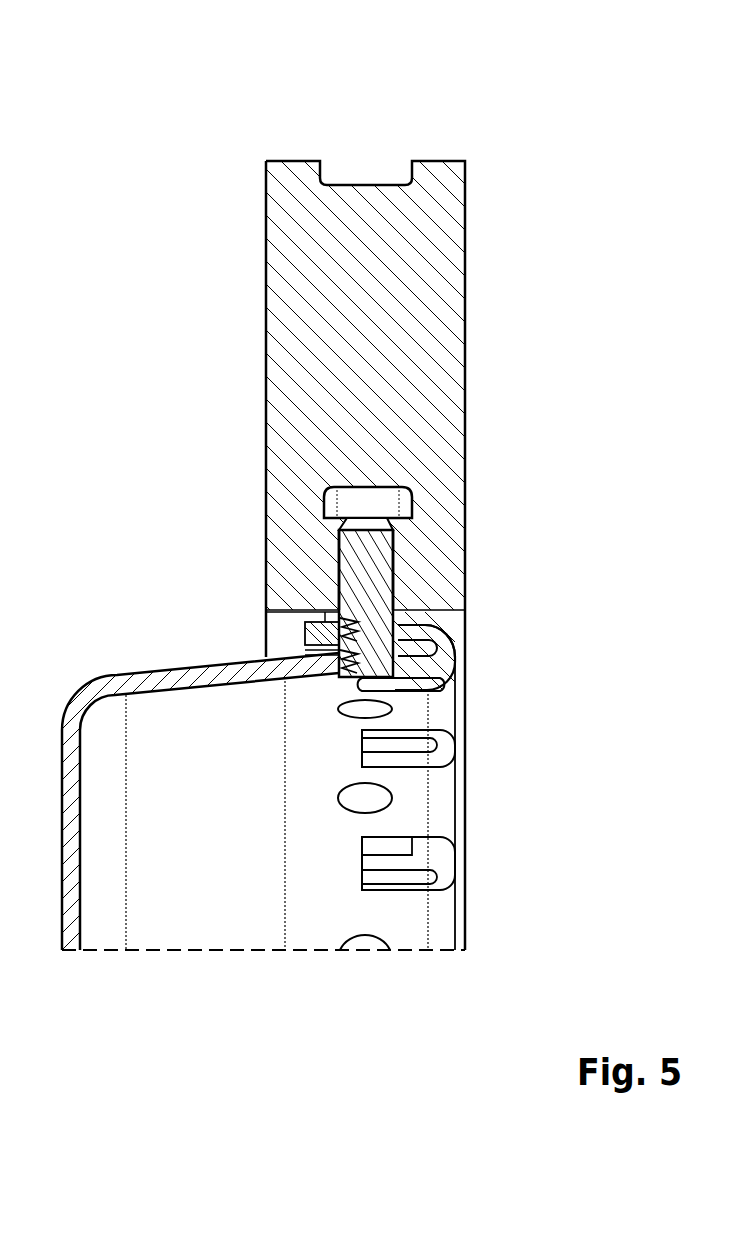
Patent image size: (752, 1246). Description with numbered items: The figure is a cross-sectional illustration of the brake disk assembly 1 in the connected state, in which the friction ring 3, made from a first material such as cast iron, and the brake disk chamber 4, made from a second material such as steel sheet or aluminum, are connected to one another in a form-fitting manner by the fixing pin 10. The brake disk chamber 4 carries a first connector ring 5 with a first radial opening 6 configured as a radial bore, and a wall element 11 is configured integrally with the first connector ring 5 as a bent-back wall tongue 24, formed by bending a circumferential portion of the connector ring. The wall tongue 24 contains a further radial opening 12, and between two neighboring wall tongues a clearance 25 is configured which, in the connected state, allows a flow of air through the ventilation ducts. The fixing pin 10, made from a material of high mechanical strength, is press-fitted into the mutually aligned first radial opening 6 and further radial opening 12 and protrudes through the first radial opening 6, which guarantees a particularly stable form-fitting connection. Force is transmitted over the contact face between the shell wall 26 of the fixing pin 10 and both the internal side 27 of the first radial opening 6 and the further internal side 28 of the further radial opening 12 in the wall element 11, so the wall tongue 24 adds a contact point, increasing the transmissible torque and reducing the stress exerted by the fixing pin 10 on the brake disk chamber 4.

The brake disk assembly 1 is at (200, 112).
The friction ring 3 is at (440, 287).
The brake disk chamber 4 is at (181, 908).
The first connector ring 5 is at (311, 700).
The first radial opening 6 is at (400, 678).
The fixing pin 10 is at (381, 550).
The wall element 11 is at (415, 633).
The further radial opening 12 is at (400, 645).
The wall tongue 24 is at (426, 641).
The clearance 25 is at (416, 853).
The shell wall 26 is at (398, 588).
The internal side 27 is at (325, 650).
The further internal side 28 is at (325, 618).